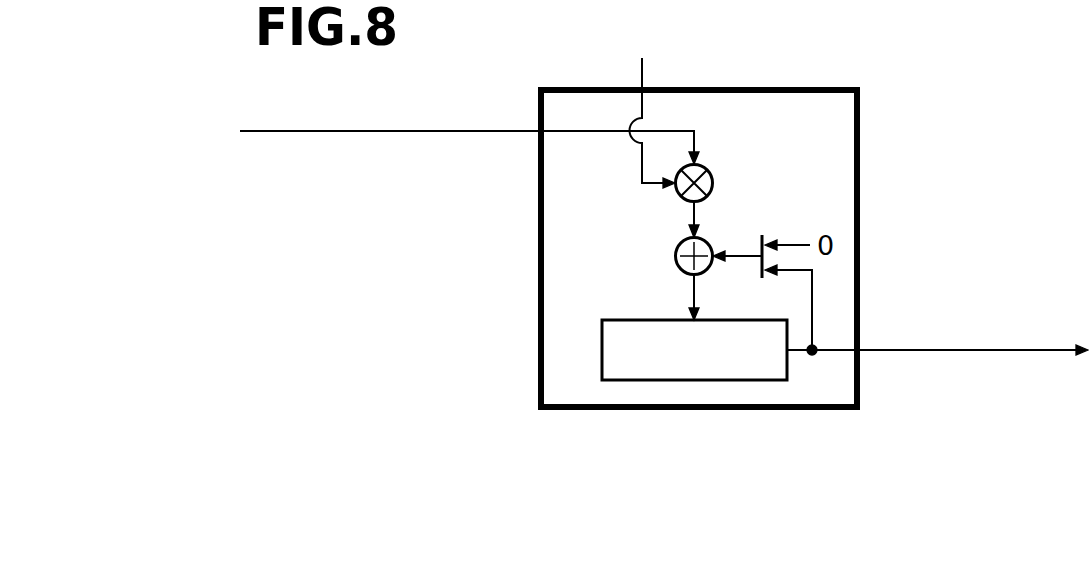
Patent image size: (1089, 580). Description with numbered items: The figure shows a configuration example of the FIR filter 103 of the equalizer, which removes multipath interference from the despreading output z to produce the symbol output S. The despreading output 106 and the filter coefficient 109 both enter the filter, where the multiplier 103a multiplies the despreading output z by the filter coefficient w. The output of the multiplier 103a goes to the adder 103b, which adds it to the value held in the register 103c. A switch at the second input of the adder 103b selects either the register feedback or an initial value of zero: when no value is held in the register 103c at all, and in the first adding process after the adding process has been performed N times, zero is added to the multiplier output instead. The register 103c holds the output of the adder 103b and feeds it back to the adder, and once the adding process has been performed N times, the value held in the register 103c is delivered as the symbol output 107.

The FIR filter 103 is at (540, 366).
The multiplier 103a is at (713, 183).
The adder 103b is at (677, 250).
The register 103c is at (609, 320).
The despreading output 106 is at (380, 132).
The symbol output 107 is at (985, 352).
The filter coefficient 109 is at (643, 70).